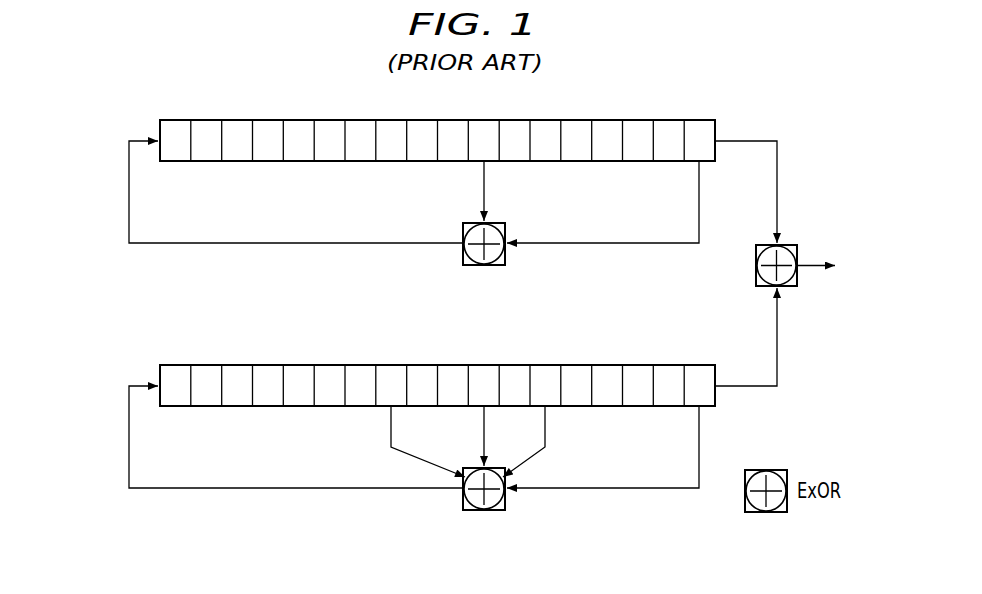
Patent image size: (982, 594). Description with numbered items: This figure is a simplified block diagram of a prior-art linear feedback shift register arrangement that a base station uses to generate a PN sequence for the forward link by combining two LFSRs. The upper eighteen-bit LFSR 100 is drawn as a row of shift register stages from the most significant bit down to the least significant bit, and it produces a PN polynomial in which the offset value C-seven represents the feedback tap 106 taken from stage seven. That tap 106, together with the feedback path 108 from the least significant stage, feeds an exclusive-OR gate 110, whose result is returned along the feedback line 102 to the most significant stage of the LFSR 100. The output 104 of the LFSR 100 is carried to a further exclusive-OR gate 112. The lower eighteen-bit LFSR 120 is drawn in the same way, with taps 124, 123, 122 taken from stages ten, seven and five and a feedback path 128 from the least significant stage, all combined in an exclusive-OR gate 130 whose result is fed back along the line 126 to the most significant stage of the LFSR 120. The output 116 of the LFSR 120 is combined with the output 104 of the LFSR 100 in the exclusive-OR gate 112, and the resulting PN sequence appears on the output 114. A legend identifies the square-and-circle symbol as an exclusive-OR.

The LFSR 100 is at (284, 107).
The feedback line to MSB of shift register 1 102 is at (129, 190).
The output line of shift register 1 104 is at (743, 141).
The feedback tap 106 is at (487, 185).
The feedback line from LSB of shift register 1 108 is at (600, 246).
The exclusive-OR gate 110 is at (487, 266).
The exclusive-OR gate combining register outputs 112 is at (786, 288).
The PN sequence output 114 is at (812, 262).
The output line of shift register 2 116 is at (742, 392).
The LFSR 120 is at (284, 352).
The tap line from stage 5 of shift register 2 122 is at (547, 425).
The tap line from stage 7 of shift register 2 123 is at (480, 422).
The tap line from stage 10 of shift register 2 124 is at (388, 426).
The feedback line to MSB of shift register 2 126 is at (129, 437).
The feedback line from LSB of shift register 2 128 is at (600, 490).
The exclusive-OR gate 130 is at (487, 511).